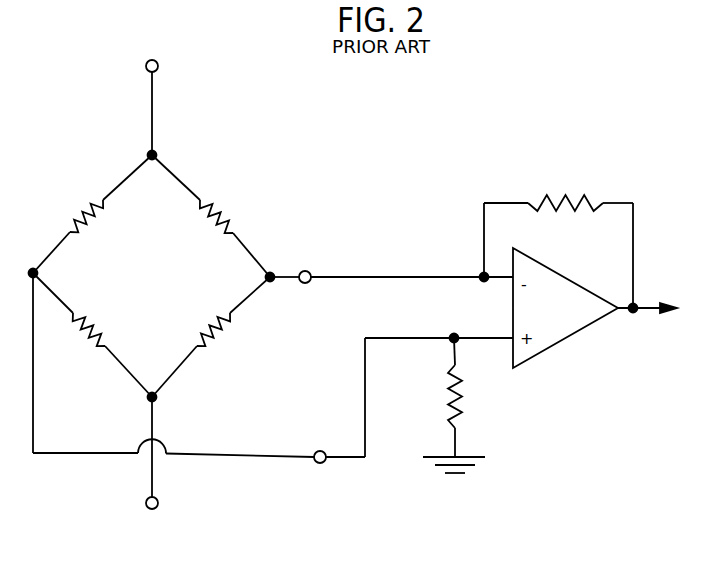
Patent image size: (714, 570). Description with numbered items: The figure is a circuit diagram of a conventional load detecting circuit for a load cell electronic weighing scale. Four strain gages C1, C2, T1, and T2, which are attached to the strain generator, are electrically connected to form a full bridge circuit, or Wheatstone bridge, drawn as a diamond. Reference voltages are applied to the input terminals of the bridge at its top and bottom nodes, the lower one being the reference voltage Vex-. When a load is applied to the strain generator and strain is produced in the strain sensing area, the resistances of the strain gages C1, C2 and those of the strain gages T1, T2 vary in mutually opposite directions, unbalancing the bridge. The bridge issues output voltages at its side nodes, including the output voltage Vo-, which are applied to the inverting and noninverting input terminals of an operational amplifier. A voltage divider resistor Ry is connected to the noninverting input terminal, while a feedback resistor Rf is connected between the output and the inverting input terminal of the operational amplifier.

The strain gage T1 is at (92, 214).
The strain gage C1 is at (211, 216).
The strain gage C2 is at (92, 335).
The strain gage T2 is at (211, 337).
The feedback resistor Rf is at (558, 242).
The voltage divider resistor Ry is at (455, 405).
The reference voltage Vex- is at (152, 465).
The output voltage Vo- is at (339, 400).